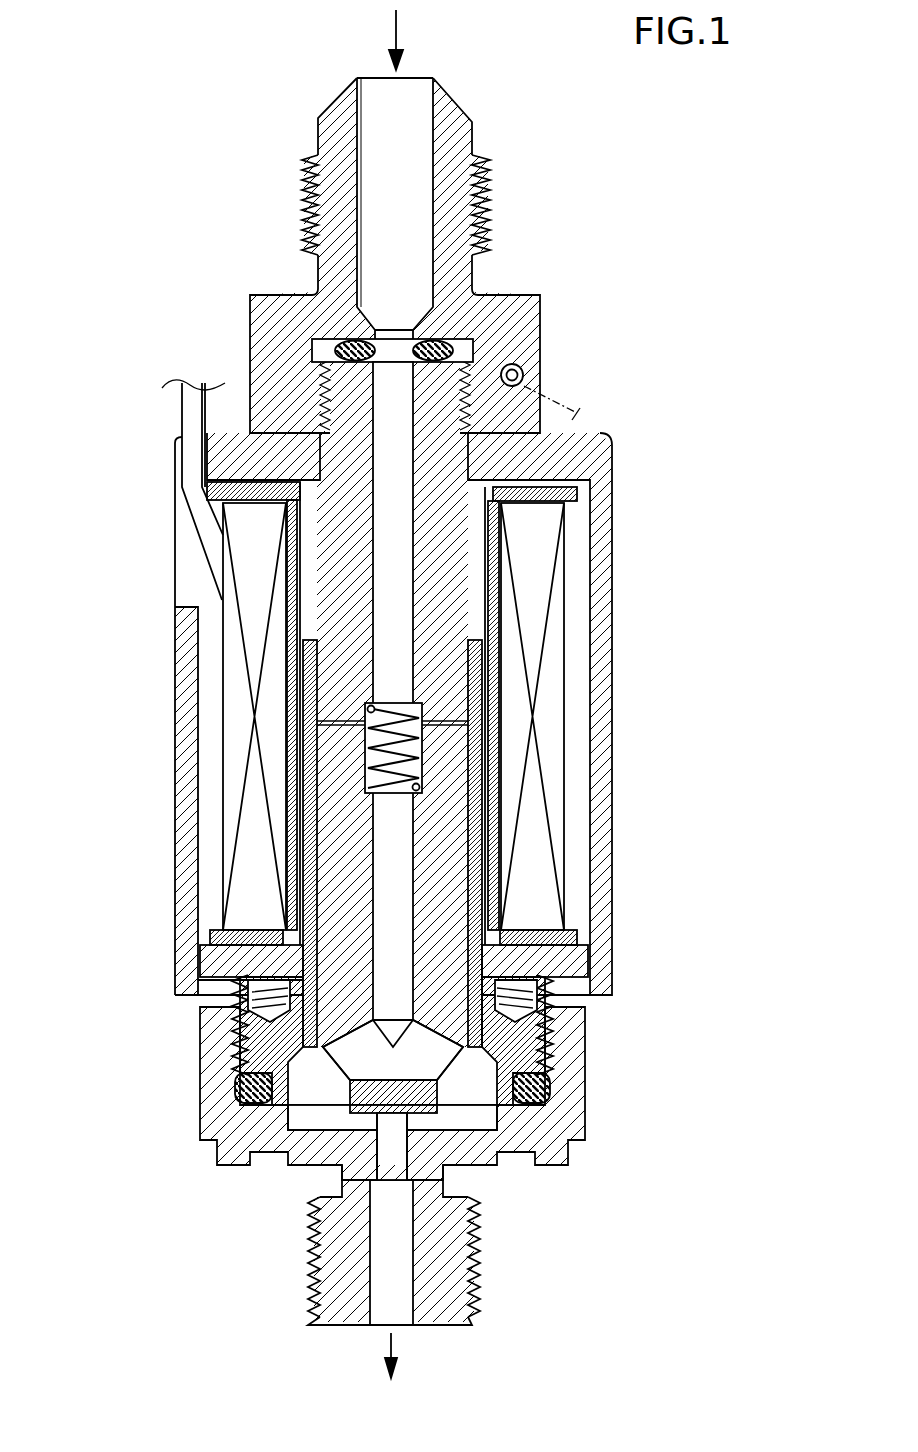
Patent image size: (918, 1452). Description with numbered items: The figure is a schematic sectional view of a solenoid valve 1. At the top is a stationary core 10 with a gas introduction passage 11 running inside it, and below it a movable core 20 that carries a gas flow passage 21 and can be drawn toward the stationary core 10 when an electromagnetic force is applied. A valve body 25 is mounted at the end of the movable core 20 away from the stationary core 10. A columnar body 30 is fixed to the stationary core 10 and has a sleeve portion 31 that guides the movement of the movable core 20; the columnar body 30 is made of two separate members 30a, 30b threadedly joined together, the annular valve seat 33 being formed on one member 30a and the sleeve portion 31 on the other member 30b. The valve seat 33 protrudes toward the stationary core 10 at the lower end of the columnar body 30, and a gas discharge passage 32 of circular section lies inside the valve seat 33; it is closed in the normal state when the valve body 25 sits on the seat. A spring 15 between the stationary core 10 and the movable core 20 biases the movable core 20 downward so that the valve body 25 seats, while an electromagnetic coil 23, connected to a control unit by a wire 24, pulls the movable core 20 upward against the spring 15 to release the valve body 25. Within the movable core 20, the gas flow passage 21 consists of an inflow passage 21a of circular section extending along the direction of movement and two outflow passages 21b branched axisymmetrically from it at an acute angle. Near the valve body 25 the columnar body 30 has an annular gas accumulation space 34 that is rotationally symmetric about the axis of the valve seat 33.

The solenoid valve 1 is at (510, 90).
The stationary core 10 is at (465, 372).
The gas introduction passage 11 is at (420, 345).
The spring 15 is at (317, 747).
The movable core 20 is at (443, 752).
The gas flow passage 21 is at (408, 721).
The inflow passage 21a is at (398, 932).
The outflow passages 21b is at (455, 1042).
The electromagnetic coil 23 is at (540, 533).
The wire 24 is at (182, 409).
The valve body 25 is at (415, 1115).
The columnar body 30 is at (477, 1077).
The member 30a is at (558, 1122).
The member 30b is at (548, 1047).
The sleeve portion 31 is at (307, 855).
The gas discharge passage 32 is at (387, 1150).
The valve seat 33 is at (372, 1130).
The annular gas accumulation space 34 is at (300, 1070).